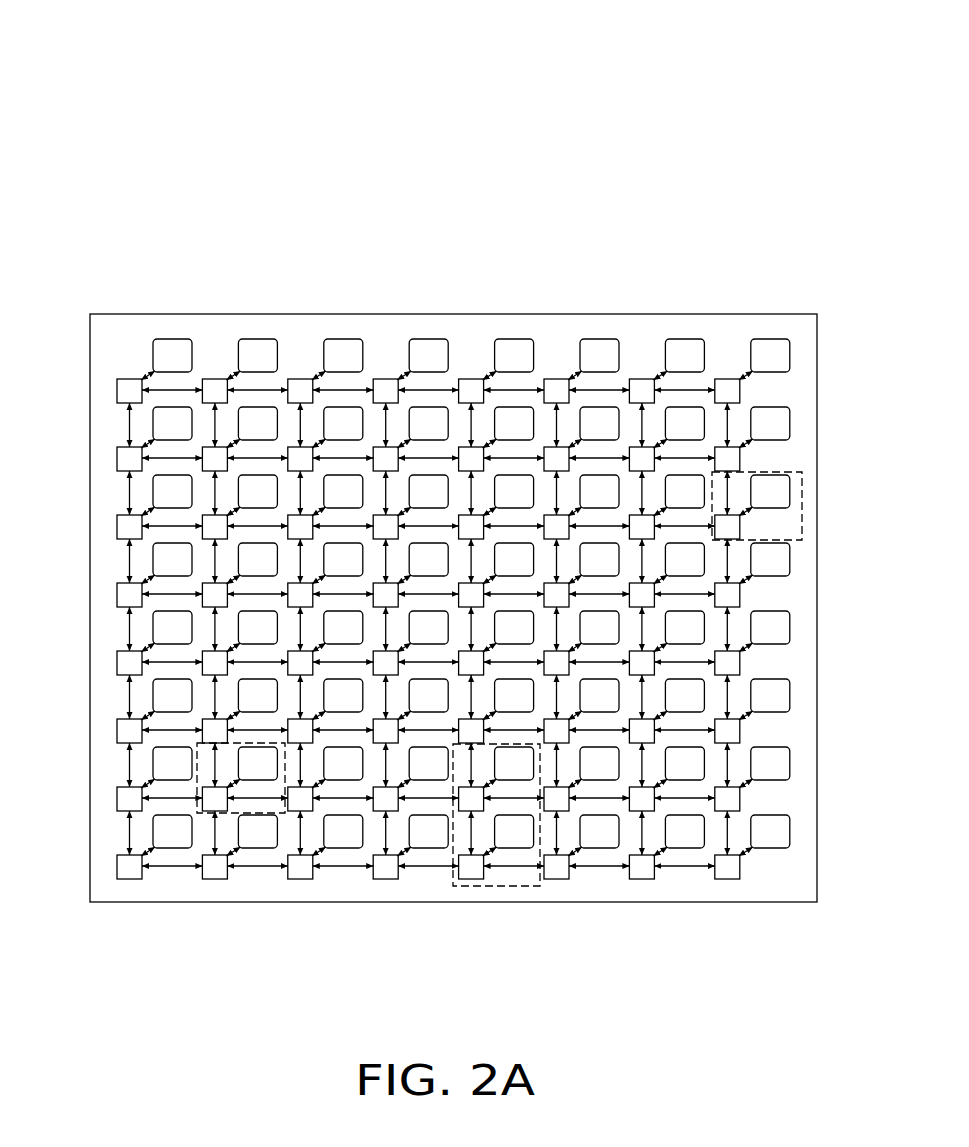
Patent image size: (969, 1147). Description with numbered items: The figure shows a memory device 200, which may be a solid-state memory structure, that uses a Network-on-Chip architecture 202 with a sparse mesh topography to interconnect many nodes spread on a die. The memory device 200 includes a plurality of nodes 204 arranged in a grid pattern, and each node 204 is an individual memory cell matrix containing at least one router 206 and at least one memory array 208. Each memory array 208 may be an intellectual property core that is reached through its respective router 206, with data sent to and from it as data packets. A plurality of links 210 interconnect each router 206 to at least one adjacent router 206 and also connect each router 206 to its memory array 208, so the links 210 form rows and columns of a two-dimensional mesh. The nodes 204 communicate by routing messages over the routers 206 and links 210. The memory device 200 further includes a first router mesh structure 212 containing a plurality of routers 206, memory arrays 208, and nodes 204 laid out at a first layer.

The memory device 200 is at (575, 78).
The Network-on-Chip architecture 202 is at (728, 313).
The node 204 is at (803, 481).
The router 206 is at (732, 528).
The memory array 208 is at (782, 495).
The link 210 is at (732, 482).
The first router mesh structure 212 is at (515, 887).